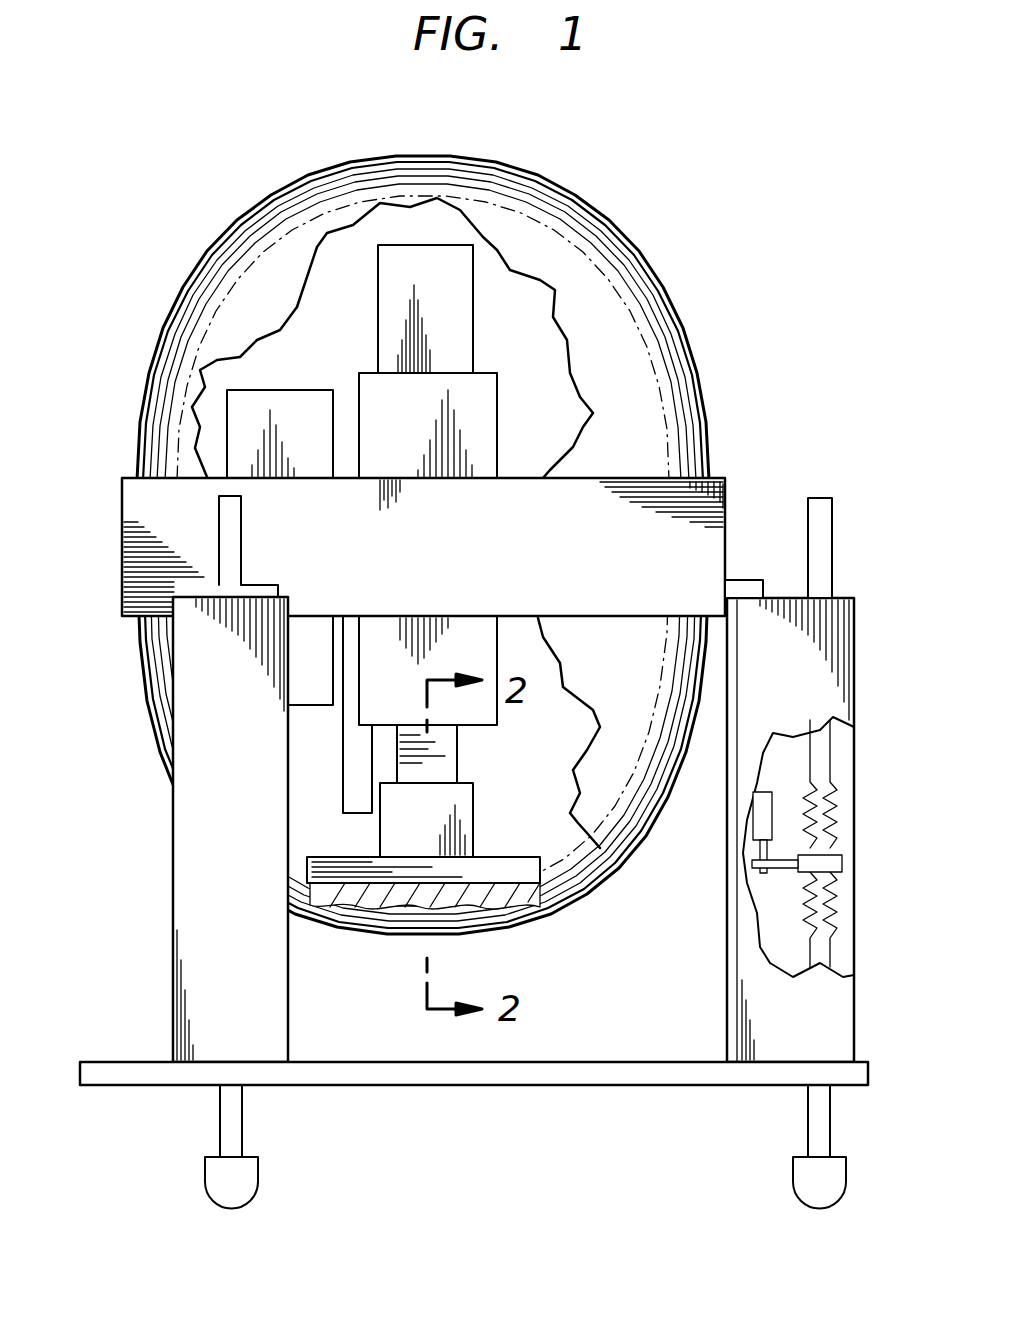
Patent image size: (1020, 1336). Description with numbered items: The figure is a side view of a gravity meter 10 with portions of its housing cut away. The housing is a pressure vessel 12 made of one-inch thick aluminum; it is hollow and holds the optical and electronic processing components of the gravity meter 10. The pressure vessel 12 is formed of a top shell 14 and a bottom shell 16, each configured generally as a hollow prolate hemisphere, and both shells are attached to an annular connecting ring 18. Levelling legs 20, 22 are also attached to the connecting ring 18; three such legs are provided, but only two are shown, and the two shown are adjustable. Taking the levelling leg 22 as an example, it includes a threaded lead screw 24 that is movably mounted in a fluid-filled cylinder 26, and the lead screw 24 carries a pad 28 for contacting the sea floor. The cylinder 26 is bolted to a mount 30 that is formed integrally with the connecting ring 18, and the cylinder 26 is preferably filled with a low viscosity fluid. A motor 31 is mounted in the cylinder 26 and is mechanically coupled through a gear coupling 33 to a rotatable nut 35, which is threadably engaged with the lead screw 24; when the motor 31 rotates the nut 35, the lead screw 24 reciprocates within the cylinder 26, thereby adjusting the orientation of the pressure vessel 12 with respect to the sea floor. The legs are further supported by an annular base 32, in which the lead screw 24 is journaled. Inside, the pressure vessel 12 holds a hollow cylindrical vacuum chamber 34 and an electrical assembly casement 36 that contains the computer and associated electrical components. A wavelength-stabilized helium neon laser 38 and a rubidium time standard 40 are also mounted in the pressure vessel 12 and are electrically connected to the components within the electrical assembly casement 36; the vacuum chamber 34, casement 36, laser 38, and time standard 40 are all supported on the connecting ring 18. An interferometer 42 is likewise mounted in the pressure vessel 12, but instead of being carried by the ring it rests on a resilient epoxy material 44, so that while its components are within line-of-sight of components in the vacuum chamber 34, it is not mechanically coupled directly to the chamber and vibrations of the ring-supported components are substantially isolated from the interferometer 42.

The gravity meter 10 is at (752, 454).
The pressure vessel 12 is at (623, 362).
The top shell 14 is at (257, 270).
The bottom shell 16 is at (137, 687).
The connecting ring 18 is at (122, 500).
The levelling leg 20 is at (190, 888).
The levelling leg 22 is at (840, 807).
The lead screw 24 is at (833, 533).
The cylinder 26 is at (854, 663).
The pad 28 is at (805, 1180).
The mount 30 is at (750, 580).
The motor 31 is at (755, 830).
The base 32 is at (640, 1060).
The gear coupling 33 is at (783, 872).
The vacuum chamber 34 is at (453, 268).
The nut 35 is at (833, 863).
The electrical assembly casement 36 is at (470, 403).
The laser 38 is at (253, 420).
The rubidium time standard 40 is at (352, 790).
The interferometer 42 is at (468, 800).
The resilient epoxy material 44 is at (510, 895).